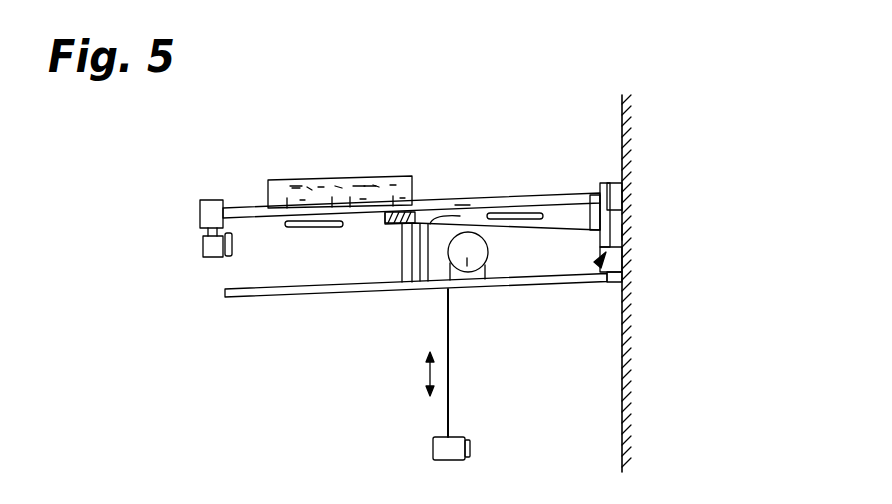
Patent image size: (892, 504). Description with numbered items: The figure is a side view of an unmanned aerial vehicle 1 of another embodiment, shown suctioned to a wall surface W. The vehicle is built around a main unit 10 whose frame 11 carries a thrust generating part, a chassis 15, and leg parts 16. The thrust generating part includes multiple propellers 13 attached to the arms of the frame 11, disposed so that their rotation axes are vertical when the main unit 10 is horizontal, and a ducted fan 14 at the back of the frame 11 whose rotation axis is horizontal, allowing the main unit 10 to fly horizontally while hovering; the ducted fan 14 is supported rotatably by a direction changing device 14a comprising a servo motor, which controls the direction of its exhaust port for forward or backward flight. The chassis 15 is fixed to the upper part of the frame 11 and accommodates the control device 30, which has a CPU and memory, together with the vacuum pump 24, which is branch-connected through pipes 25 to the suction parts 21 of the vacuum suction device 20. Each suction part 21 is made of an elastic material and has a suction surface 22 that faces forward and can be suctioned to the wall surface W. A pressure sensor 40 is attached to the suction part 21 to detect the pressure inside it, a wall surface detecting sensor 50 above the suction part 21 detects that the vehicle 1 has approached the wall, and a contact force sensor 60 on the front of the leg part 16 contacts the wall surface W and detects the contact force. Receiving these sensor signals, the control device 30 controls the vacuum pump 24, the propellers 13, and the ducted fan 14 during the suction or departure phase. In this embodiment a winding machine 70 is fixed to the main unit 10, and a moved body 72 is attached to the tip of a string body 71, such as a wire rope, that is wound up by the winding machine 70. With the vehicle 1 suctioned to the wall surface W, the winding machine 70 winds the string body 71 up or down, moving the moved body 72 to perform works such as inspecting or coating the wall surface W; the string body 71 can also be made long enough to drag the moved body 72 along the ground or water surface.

The unmanned aerial vehicle 1 is at (525, 127).
The main unit 10 is at (470, 188).
The frame 11 is at (500, 196).
The propellers 13 is at (300, 228).
The ducted fan 14 is at (203, 245).
The direction changing device 14a is at (200, 208).
The chassis 15 is at (267, 188).
The leg parts 16 is at (365, 297).
The vacuum suction device 20 is at (598, 263).
The suction parts 21 is at (625, 245).
The suction surface 22 is at (625, 232).
The vacuum pump 24 is at (370, 178).
The pipes 25 is at (462, 207).
The control device 30 is at (298, 178).
The pressure sensors 40 is at (598, 222).
The wall surface detecting sensor 50 is at (610, 183).
The contact force sensors 60 is at (615, 283).
The winding machine 70 is at (467, 266).
The string body 71 is at (449, 385).
The moved body 72 is at (433, 448).
The wall surface W is at (621, 449).